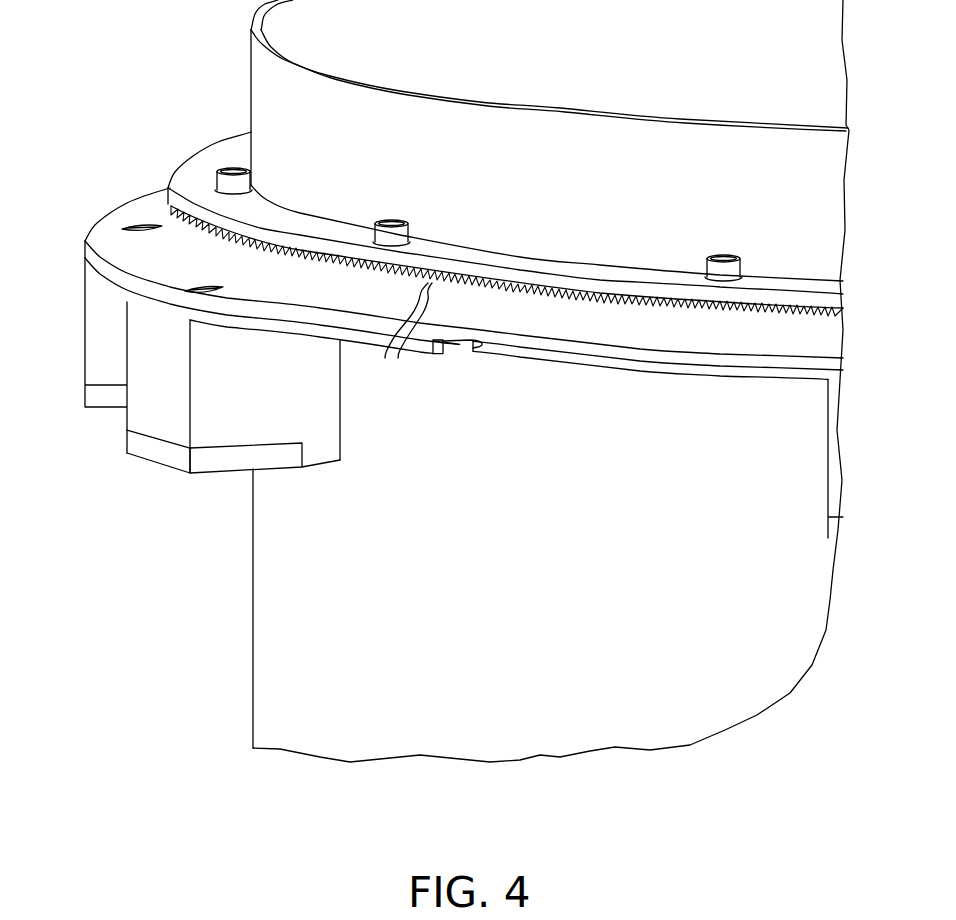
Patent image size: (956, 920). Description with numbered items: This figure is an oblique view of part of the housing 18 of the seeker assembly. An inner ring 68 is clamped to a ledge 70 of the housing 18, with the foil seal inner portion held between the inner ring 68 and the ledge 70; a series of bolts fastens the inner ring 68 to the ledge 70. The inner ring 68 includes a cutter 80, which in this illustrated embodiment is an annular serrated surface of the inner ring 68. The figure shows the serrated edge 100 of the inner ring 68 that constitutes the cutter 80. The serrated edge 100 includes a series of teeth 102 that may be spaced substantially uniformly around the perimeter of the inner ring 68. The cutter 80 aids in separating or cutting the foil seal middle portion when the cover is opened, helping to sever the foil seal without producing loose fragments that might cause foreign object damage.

The housing 18 is at (141, 78).
The inner ring 68 is at (200, 170).
The ledge 70 is at (190, 243).
The cutter 80 is at (210, 249).
The serrated edge 100 is at (267, 270).
The teeth 102 is at (602, 410).